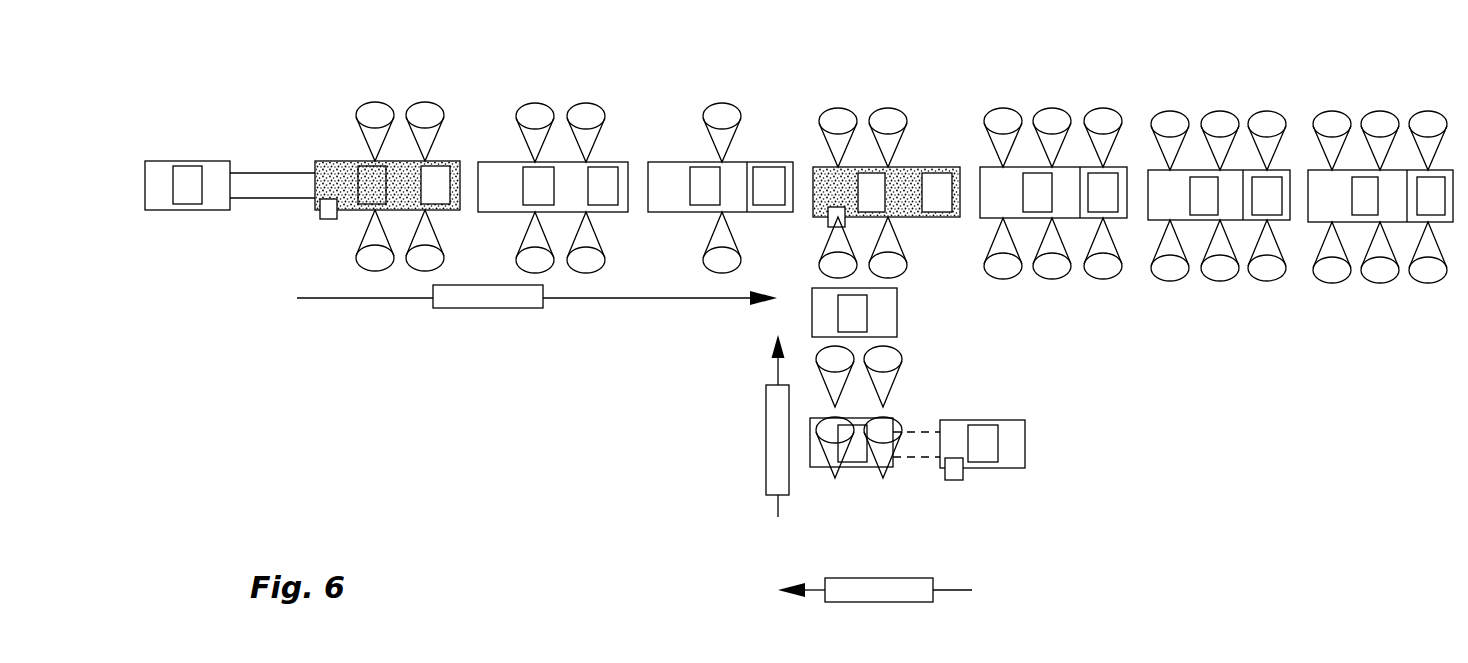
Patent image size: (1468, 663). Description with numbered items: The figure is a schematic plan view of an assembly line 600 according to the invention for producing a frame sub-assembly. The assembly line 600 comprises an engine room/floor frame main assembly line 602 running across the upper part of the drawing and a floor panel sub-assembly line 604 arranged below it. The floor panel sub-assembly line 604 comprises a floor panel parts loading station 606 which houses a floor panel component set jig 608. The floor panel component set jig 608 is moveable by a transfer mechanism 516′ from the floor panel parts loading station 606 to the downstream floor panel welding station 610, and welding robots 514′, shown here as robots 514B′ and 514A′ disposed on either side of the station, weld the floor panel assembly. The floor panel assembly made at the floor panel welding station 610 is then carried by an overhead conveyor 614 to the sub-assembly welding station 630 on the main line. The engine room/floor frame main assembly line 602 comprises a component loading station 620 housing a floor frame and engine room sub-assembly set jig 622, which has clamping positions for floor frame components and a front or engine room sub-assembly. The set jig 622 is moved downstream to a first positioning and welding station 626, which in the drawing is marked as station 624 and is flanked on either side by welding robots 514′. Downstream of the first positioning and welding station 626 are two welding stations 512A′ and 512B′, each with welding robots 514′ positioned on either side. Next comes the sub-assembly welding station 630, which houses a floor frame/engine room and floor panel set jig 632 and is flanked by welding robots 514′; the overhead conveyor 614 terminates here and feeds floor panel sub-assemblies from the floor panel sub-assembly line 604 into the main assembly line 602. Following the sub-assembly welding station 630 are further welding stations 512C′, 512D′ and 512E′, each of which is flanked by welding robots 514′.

The assembly line 600 is at (290, 447).
The engine room/floor frame main assembly line 602 is at (247, 345).
The floor panel sub-assembly line 604 is at (1125, 457).
The floor panel parts loading station 606 is at (1025, 467).
The floor panel component set jig 608 is at (998, 438).
The floor panel welding station 610 is at (817, 467).
The overhead conveyor 614 is at (897, 318).
The component loading station 620 is at (167, 161).
The floor frame and engine room sub-assembly set jig 622 is at (358, 167).
The station 1 624 is at (401, 125).
The first positioning and welding station 626 is at (393, 162).
The sub-assembly welding station 630 is at (915, 167).
The floor frame/engine room and floor panel set jig 632 is at (942, 173).
The transfer mechanism 516′ is at (267, 200).
The welding robots 514′ is at (365, 107).
The robots 514A′ is at (900, 367).
The robots 514B′ is at (892, 525).
The welding station 512A′ is at (612, 162).
The welding station 512B′ is at (776, 162).
The welding station 512C′ is at (1077, 167).
The welding station 512D′ is at (1238, 170).
The welding station 512E′ is at (1400, 172).